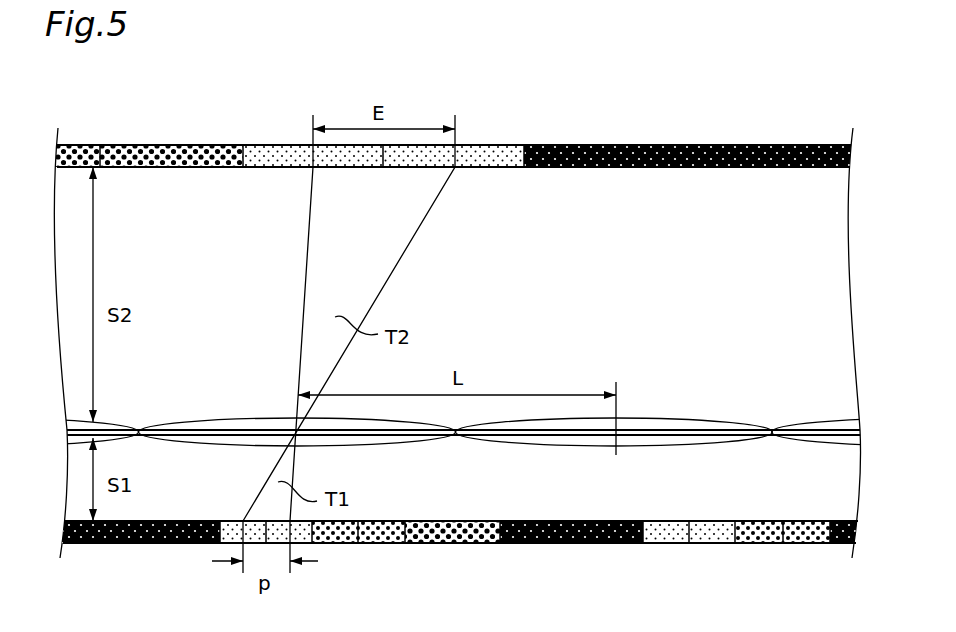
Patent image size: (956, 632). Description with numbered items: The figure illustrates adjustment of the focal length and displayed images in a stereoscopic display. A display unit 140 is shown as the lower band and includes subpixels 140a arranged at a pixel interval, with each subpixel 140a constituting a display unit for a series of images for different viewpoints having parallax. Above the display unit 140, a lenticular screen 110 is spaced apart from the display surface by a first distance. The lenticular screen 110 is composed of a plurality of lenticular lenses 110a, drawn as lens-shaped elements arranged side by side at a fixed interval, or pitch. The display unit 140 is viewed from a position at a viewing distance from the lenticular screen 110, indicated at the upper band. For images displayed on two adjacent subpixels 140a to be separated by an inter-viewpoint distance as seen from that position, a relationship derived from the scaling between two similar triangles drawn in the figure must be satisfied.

The lenticular screen 110 is at (691, 406).
The lenticular lens 110a is at (408, 446).
The display unit 140 is at (697, 568).
The subpixel 140a is at (383, 543).